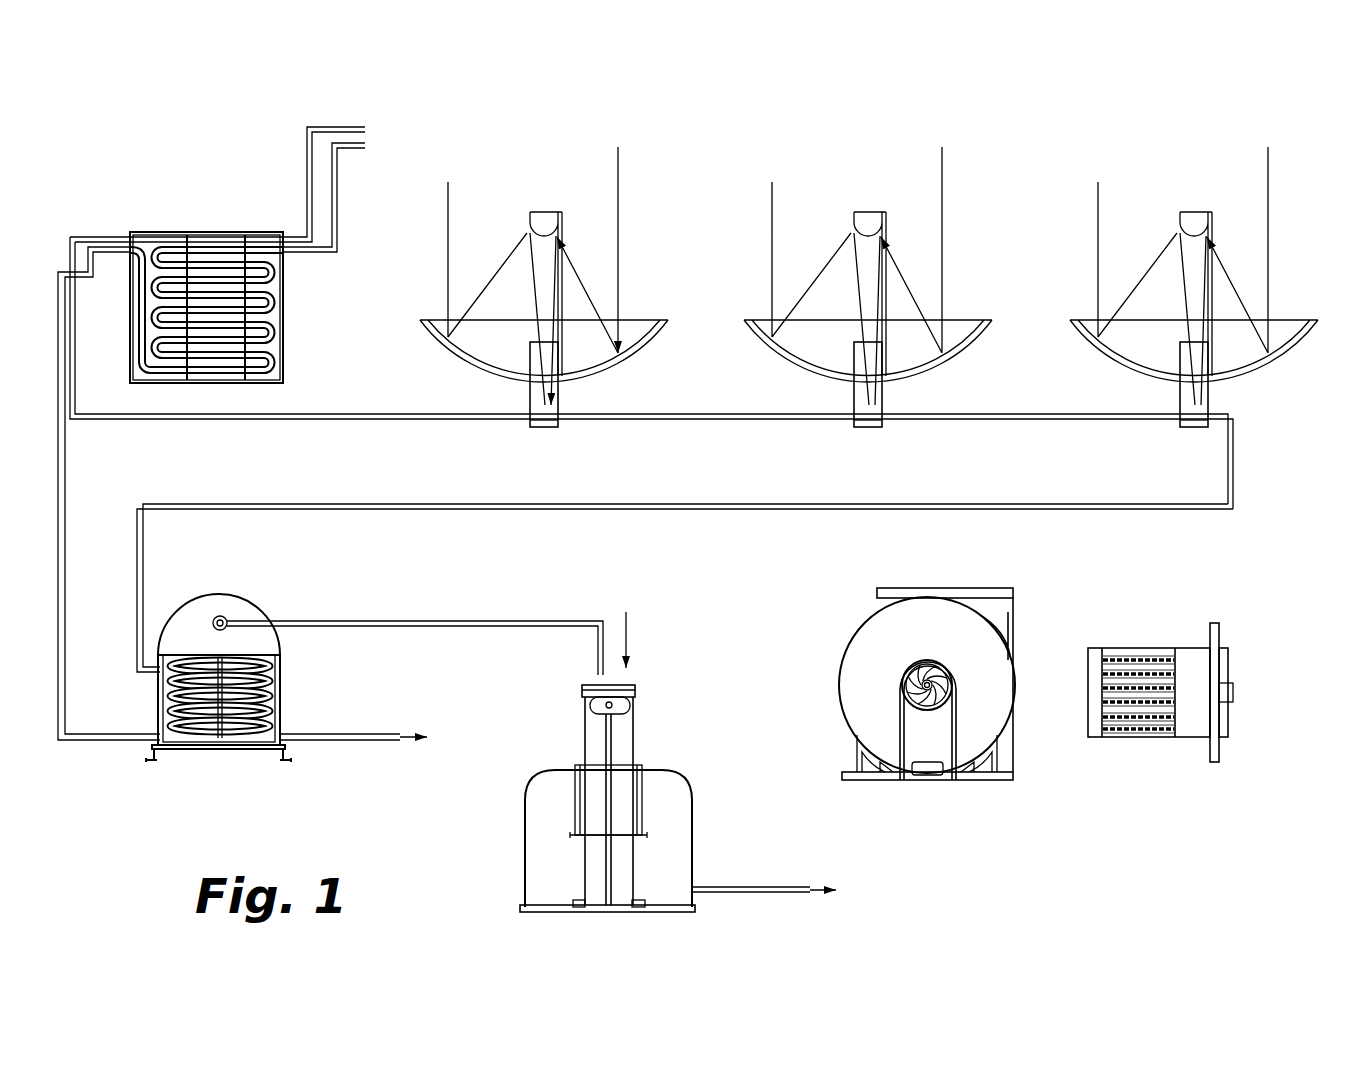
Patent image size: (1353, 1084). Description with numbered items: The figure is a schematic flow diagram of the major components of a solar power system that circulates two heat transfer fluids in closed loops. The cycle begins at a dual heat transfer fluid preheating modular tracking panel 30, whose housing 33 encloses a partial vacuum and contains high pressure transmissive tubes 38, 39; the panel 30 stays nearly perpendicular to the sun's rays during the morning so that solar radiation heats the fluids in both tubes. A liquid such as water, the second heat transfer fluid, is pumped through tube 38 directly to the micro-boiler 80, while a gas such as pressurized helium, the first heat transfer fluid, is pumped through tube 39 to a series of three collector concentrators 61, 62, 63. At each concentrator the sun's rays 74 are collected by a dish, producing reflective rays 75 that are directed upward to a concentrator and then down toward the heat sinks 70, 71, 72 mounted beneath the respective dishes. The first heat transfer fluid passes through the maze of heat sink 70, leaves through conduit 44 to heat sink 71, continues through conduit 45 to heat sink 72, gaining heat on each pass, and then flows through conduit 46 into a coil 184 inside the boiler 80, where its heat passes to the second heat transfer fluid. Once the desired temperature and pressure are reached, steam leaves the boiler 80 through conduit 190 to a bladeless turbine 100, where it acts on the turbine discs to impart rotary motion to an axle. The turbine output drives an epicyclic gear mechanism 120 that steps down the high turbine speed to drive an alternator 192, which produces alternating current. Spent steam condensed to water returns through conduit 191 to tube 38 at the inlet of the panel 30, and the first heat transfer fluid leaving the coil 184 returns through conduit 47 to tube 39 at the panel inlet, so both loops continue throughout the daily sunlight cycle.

The dual heat transfer fluid preheating modular tracking panel 30 is at (263, 232).
The housing 33 is at (131, 381).
The tube 38 is at (201, 249).
The tube 39 is at (342, 125).
The conduit 44 is at (735, 421).
The conduit 45 is at (1018, 421).
The conduit 46 is at (633, 504).
The conduit 47 is at (338, 734).
The collector concentrator 61 is at (549, 258).
The collector concentrator 62 is at (873, 258).
The collector concentrator 63 is at (1199, 258).
The heat sink 70 is at (557, 405).
The heat sink 71 is at (881, 405).
The heat sink 72 is at (1207, 405).
The sun's rays 74 is at (449, 222).
The reflective rays 75 is at (488, 280).
The micro-boiler 80 is at (272, 600).
The coil 184 is at (172, 670).
The conduit 190 is at (492, 620).
The turbine 100 is at (663, 700).
The conduit 191 is at (753, 886).
The epicyclic gear mechanism 120 is at (868, 652).
The alternator 192 is at (1223, 655).